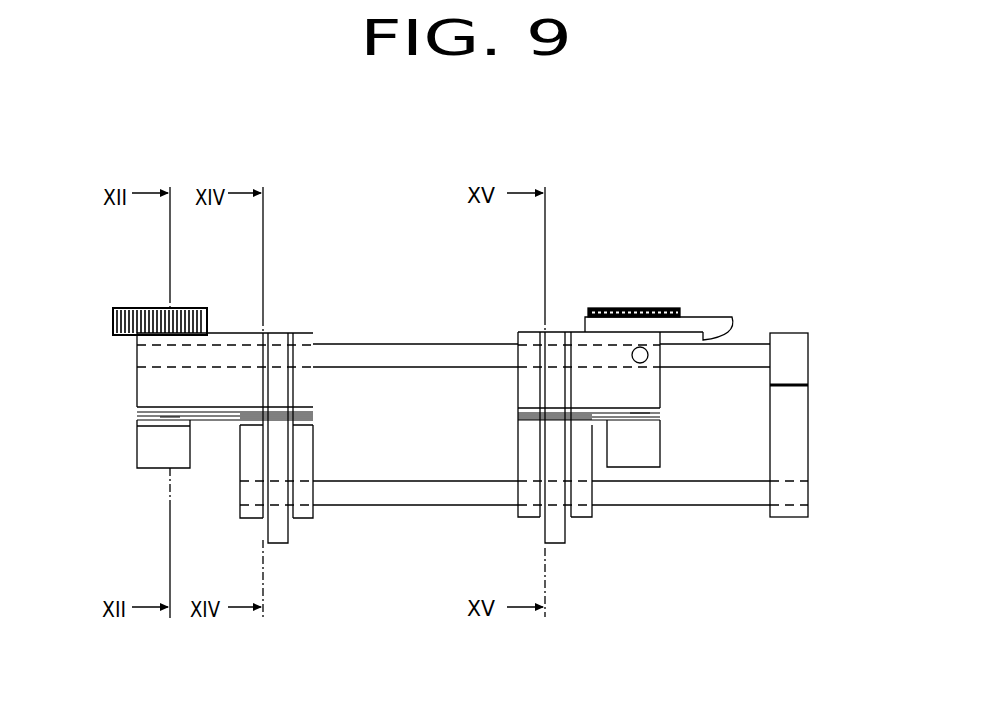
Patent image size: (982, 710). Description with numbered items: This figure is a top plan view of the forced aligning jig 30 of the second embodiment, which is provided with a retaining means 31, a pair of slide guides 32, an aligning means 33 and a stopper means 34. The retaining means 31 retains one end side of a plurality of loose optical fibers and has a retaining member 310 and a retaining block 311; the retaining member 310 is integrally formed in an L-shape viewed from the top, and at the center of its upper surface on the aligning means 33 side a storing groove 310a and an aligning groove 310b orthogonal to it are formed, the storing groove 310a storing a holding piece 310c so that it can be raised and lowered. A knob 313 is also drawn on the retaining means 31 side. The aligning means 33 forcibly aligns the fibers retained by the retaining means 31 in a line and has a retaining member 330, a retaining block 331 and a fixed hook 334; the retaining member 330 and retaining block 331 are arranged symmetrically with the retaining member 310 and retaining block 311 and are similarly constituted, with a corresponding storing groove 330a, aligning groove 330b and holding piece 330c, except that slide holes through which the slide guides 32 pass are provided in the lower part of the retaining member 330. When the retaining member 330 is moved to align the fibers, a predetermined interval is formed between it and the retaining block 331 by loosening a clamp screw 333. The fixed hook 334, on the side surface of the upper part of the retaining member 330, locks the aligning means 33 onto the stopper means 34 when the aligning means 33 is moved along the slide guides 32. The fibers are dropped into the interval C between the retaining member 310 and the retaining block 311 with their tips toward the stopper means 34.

The forced aligning jig 30 is at (353, 238).
The retaining means 31 is at (246, 413).
The slide guides 32 is at (403, 353).
The aligning means 33 is at (580, 392).
The stopper means 34 is at (802, 412).
The retaining member 310 is at (135, 385).
The retaining block 311 is at (147, 470).
The knurled adjusting knob 313 is at (130, 308).
The storing groove 310a is at (290, 441).
The aligning groove 310b is at (312, 417).
The holding piece 310c is at (280, 528).
The retaining member 330 is at (522, 330).
The retaining block 331 is at (647, 445).
The clamp screw 333 is at (627, 308).
The fixed hook 334 is at (688, 327).
The storing groove 330a is at (540, 381).
The aligning groove 330b is at (518, 413).
The holding piece 330c is at (558, 532).
The interval C is at (170, 417).